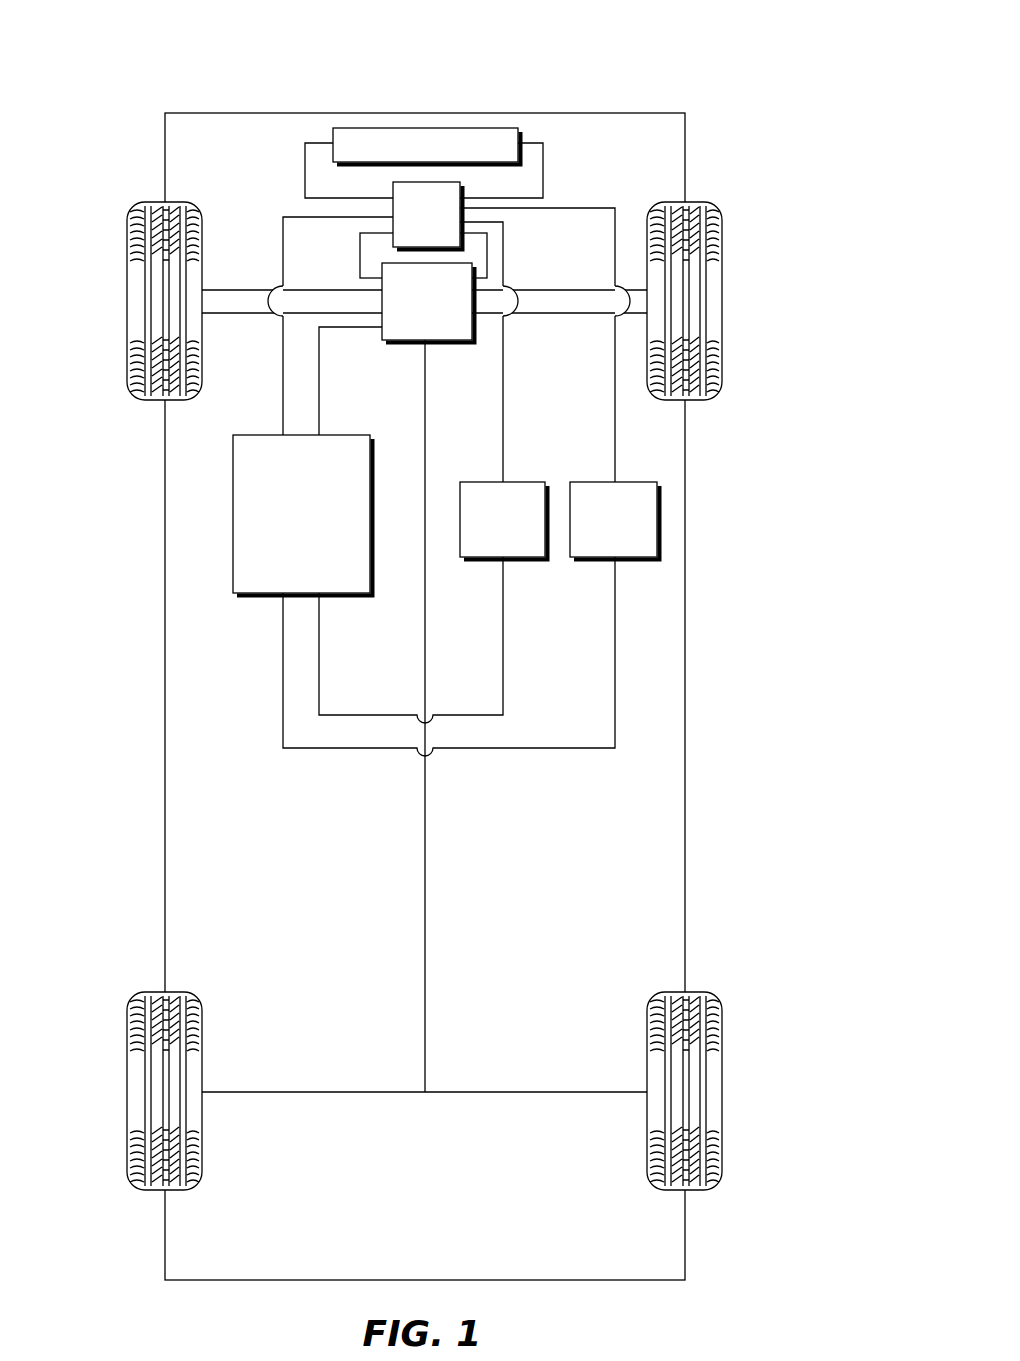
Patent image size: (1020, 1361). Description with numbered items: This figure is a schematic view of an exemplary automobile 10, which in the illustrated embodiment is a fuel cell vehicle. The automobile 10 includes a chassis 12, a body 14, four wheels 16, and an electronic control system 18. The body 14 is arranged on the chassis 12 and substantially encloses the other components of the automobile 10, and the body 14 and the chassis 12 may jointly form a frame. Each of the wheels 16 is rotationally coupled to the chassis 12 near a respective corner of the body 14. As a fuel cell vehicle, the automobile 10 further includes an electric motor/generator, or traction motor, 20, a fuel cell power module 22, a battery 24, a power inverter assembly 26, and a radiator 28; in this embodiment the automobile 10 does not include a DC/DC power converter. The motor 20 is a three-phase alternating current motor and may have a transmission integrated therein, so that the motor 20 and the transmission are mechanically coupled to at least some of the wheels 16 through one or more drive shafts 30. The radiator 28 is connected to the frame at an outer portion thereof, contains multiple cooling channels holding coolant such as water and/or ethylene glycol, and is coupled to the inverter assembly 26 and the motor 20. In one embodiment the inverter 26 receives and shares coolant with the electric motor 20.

The automobile 10 is at (703, 34).
The chassis 12 is at (423, 958).
The body 14 is at (180, 515).
The wheels 16 is at (127, 265).
The electronic control system 18 is at (289, 526).
The electric motor/generator 20 is at (413, 314).
The fuel cell power module 22 is at (490, 531).
The battery 24 is at (601, 531).
The power inverter assembly 26 is at (413, 224).
The radiator 28 is at (371, 128).
The drive shafts 30 is at (265, 290).